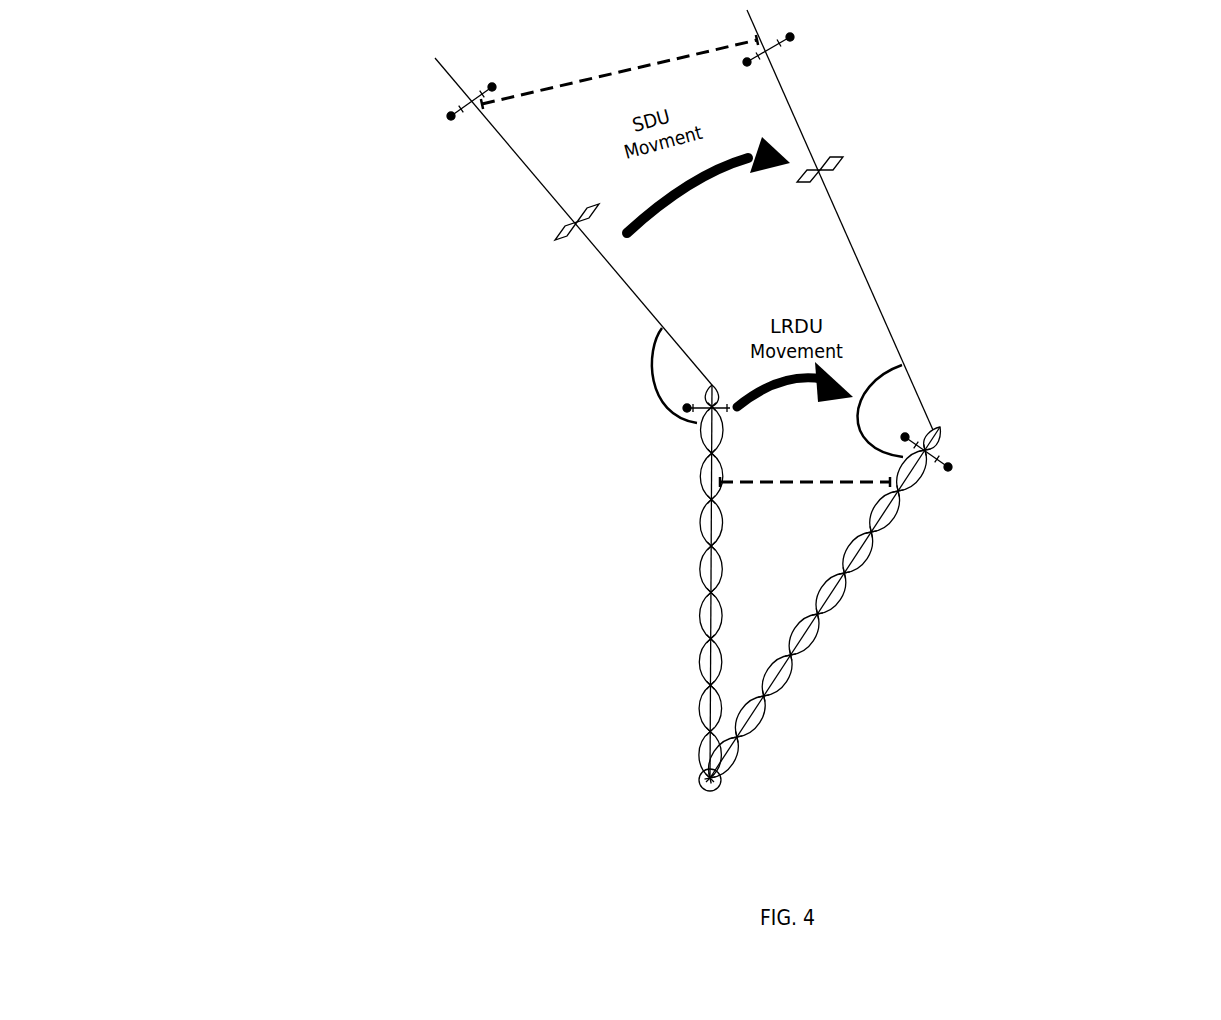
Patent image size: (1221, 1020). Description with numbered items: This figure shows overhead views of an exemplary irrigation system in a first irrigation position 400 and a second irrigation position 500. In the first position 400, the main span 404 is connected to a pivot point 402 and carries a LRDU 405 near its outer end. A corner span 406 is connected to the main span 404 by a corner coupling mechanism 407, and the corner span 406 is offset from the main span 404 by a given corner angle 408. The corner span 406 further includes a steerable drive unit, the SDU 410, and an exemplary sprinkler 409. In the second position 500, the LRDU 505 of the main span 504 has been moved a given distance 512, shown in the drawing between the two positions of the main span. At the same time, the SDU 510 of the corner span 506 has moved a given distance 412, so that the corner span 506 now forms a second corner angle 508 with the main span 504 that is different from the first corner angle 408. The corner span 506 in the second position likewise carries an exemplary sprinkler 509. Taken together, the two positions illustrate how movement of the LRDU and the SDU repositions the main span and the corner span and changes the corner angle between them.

The first irrigation position 400 is at (680, 656).
The pivot point 402 is at (702, 780).
The main span 404 is at (700, 572).
The LRDU 405 is at (687, 410).
The corner span 406 is at (540, 183).
The corner coupling mechanism 407 is at (710, 385).
The corner angle 408 is at (662, 328).
The sprinkler 409 is at (557, 233).
The steerable drive unit (SDU) 410 is at (451, 116).
The distance 412 is at (633, 67).
The second irrigation position 500 is at (880, 660).
The main span 504 is at (845, 575).
The LRDU 505 is at (948, 467).
The corner span 506 is at (802, 128).
The second corner angle 508 is at (857, 417).
The sprinkler 509 is at (842, 158).
The SDU 510 is at (790, 37).
The distance 512 is at (810, 483).